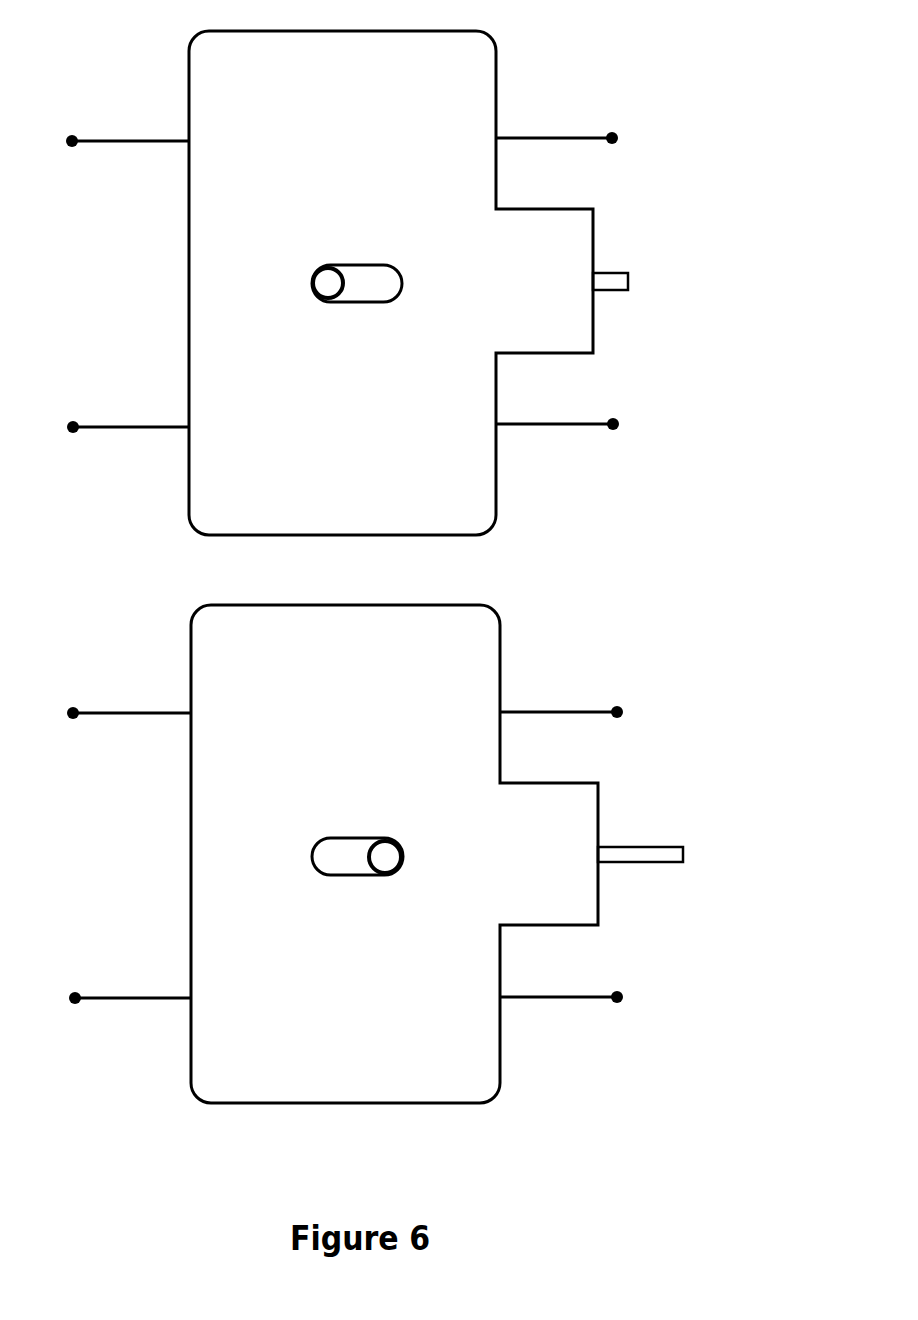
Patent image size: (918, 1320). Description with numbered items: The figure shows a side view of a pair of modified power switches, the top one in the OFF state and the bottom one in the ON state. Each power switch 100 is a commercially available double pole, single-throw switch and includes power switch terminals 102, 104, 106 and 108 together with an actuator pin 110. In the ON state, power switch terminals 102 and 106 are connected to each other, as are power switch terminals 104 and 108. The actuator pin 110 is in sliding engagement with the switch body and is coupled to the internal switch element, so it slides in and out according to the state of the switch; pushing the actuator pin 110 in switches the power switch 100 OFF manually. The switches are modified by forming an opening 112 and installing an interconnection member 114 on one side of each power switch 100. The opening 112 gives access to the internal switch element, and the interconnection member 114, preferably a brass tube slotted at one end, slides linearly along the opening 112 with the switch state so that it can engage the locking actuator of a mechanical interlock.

The power switch 100 is at (393, 567).
The power switch terminal 102 is at (566, 138).
The power switch terminal 104 is at (568, 426).
The power switch terminal 106 is at (104, 141).
The power switch terminal 108 is at (101, 427).
The actuator pin 110 is at (630, 281).
The opening 112 is at (362, 262).
The interconnection member 114 is at (330, 302).